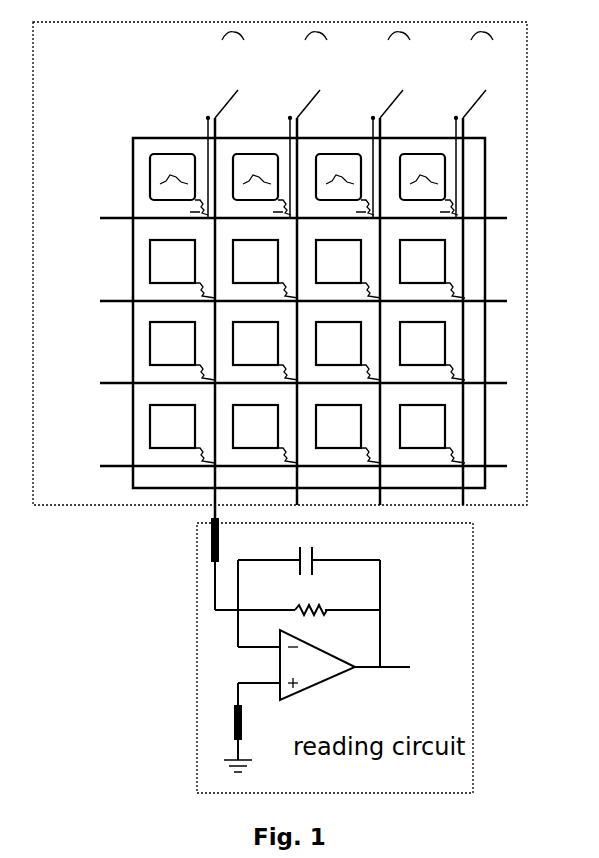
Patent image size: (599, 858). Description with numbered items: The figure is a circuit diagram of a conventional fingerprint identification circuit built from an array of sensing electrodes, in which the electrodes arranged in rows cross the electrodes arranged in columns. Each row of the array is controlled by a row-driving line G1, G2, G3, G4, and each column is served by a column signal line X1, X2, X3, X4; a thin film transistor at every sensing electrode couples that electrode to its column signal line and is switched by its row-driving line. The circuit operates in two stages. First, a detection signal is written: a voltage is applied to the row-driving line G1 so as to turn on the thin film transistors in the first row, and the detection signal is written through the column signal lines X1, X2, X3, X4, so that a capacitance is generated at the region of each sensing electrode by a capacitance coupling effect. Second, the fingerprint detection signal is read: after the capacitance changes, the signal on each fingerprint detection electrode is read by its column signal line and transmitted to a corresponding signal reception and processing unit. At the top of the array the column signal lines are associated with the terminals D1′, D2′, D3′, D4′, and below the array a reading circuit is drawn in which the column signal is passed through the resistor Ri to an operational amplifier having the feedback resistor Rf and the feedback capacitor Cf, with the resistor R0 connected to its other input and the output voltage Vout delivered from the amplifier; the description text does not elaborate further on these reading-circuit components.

The row-driving line G1 is at (277, 219).
The row-driving line G2 is at (277, 302).
The row-driving line G3 is at (277, 384).
The row-driving line G4 is at (277, 467).
The column signal line X1 is at (229, 339).
The column signal line X2 is at (311, 311).
The column signal line X3 is at (394, 311).
The column signal line X4 is at (478, 311).
The data line 1 D1′ is at (239, 75).
The data line 2 D2′ is at (321, 75).
The data line 3 D3′ is at (404, 75).
The data line 4 D4′ is at (488, 75).
The input resistor Ri is at (204, 540).
The feedback resistor Rf is at (311, 602).
The feedback capacitor Cf is at (309, 559).
The reference resistor R0 is at (254, 729).
The output voltage Vout is at (414, 667).